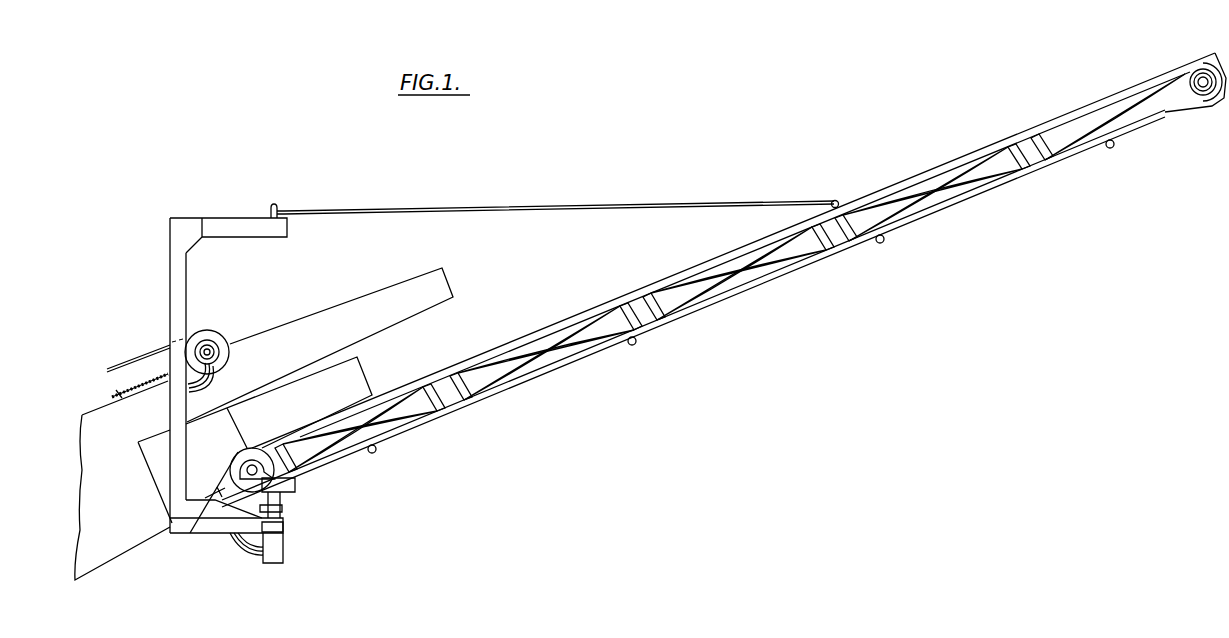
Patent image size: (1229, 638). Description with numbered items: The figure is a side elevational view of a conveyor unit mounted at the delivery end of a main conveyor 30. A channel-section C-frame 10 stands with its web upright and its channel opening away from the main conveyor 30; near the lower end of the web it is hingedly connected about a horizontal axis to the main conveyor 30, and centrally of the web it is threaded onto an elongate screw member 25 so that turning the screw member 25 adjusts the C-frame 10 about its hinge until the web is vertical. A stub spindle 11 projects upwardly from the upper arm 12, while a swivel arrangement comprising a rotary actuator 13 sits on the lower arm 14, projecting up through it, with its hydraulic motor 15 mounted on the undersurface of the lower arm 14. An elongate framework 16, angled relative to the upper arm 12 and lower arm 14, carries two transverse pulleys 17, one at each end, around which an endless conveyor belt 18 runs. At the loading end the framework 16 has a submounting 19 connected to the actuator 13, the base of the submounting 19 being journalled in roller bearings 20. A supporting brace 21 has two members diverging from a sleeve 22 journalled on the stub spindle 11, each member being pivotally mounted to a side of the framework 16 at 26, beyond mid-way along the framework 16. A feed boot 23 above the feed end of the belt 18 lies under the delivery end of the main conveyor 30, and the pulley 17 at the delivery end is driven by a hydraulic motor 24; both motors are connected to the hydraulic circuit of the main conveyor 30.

The C-frame 10 is at (167, 270).
The stub spindle 11 is at (277, 207).
The upper arm 12 is at (232, 226).
The rotary actuator 13 is at (283, 507).
The lower arm 14 is at (222, 526).
The hydraulic motor 15 is at (271, 556).
The elongate framework 16 is at (908, 229).
The pulleys 17 is at (1201, 101).
The endless conveyor belt 18 is at (297, 481).
The submounting 19 is at (296, 491).
The roller bearings 20 is at (284, 514).
The supporting brace 21 is at (517, 208).
The sleeve 22 is at (271, 212).
The feed boot 23 is at (360, 364).
The hydraulic motor 24 is at (1196, 73).
The screw member 25 is at (134, 394).
The pivotal mounting 26 is at (838, 200).
The main conveyor 30 is at (93, 392).